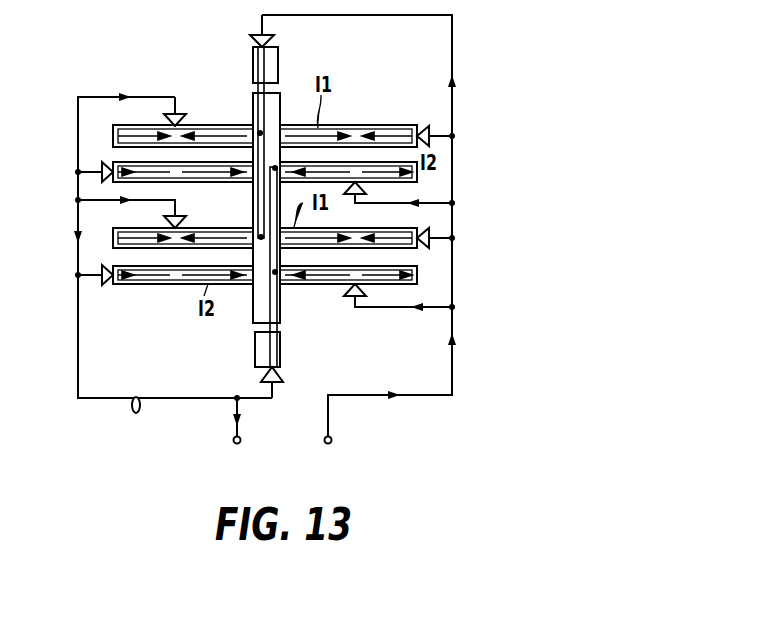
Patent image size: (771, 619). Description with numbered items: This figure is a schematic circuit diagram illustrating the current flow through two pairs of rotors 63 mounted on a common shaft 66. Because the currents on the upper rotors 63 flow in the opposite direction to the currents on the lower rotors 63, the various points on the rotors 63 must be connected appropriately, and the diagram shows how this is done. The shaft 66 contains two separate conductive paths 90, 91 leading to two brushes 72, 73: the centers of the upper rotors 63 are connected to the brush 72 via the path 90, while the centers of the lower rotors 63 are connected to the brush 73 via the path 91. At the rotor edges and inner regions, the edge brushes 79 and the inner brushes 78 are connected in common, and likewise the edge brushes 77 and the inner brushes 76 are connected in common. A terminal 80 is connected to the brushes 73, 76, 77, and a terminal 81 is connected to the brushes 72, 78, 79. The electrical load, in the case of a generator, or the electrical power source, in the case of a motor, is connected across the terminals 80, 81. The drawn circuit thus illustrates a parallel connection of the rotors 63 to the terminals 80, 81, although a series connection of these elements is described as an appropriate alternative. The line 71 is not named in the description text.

The rotor 63 is at (377, 124).
The shaft 66 is at (253, 68).
The return line 71 is at (456, 290).
The brush 72 is at (279, 44).
The brush 73 is at (283, 373).
The inner brush 76 is at (188, 118).
The edge brush 77 is at (102, 176).
The inner brush 78 is at (389, 165).
The edge brush 79 is at (425, 125).
The terminal 80 is at (233, 441).
The terminal 81 is at (333, 437).
The conductive path 90 is at (257, 110).
The conductive path 91 is at (283, 344).